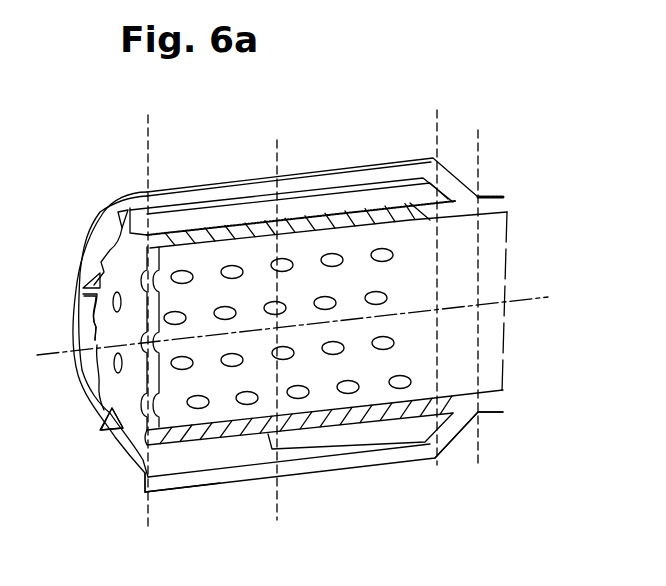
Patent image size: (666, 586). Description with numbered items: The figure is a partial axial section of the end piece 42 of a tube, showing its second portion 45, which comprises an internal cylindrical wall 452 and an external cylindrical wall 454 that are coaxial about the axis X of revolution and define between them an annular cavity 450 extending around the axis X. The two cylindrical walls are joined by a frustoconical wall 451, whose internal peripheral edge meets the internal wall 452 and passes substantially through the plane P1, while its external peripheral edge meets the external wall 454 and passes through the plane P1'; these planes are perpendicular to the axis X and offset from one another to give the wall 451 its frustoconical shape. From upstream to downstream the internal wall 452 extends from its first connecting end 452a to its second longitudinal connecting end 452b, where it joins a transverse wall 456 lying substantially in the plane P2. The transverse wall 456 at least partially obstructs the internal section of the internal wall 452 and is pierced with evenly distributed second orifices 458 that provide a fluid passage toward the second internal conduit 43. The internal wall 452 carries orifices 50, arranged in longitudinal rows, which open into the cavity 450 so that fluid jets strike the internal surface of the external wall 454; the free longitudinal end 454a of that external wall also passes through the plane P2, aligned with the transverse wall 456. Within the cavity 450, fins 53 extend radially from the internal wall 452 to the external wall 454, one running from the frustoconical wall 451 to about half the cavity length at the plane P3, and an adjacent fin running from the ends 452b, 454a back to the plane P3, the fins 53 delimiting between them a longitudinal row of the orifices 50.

The end piece 42 is at (357, 112).
The second internal conduit 43 is at (490, 338).
The second portion 45 is at (502, 400).
The orifices 50 is at (350, 386).
The fins 53 is at (290, 440).
The annular cavity 450 is at (153, 218).
The frustoconical wall 451 is at (452, 440).
The internal cylindrical wall 452 is at (380, 208).
The first connecting end 452a is at (492, 200).
The second longitudinal connecting end 452b is at (178, 434).
The external cylindrical wall 454 is at (225, 194).
The free longitudinal end 454a is at (157, 480).
The transverse wall 456 is at (135, 426).
The second orifices 458 is at (97, 322).
The plane P1 is at (514, 292).
The plane P1' is at (476, 277).
The plane P2 is at (150, 160).
The plane P3 is at (276, 159).
The axis of revolution X is at (540, 278).